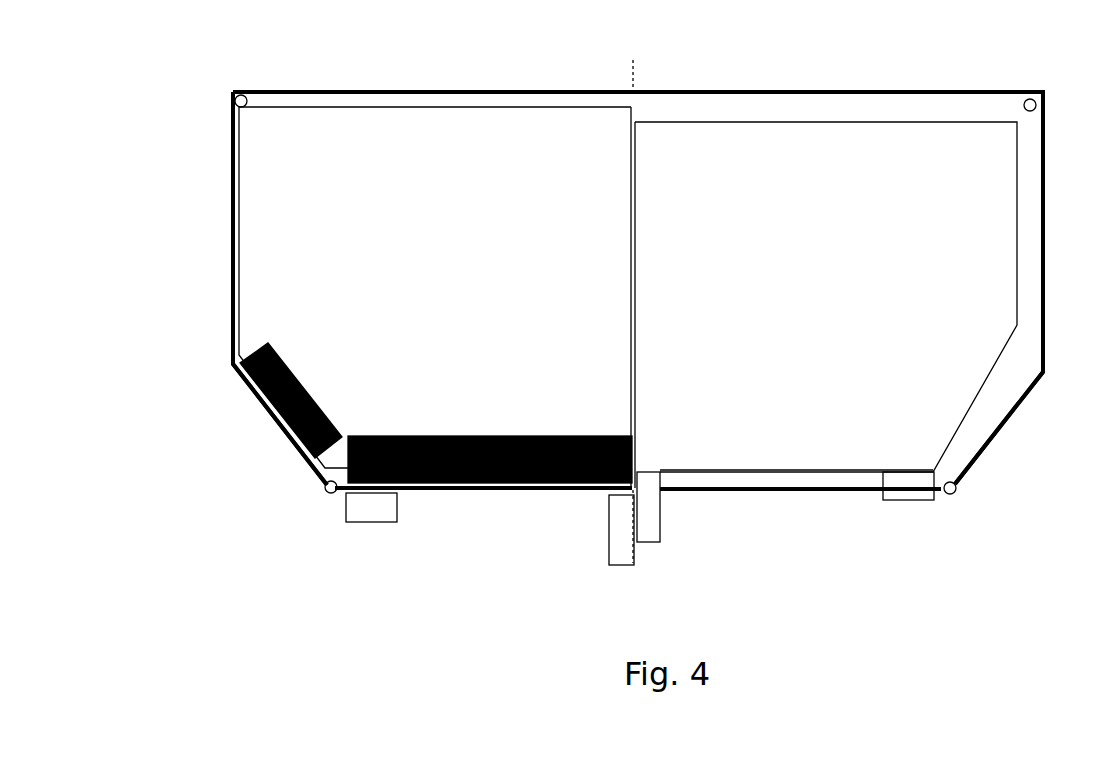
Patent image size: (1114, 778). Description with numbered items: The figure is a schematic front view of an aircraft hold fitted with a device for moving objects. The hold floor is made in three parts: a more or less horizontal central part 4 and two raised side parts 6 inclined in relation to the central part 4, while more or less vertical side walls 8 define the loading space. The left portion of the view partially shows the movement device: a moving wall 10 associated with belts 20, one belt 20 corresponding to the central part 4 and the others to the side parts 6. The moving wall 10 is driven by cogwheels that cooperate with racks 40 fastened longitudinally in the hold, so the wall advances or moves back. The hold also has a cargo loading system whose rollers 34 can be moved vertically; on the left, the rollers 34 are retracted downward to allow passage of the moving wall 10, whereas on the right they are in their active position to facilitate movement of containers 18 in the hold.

The central part 4 is at (775, 492).
The raised side part 6 is at (290, 430).
The side wall 8 is at (233, 192).
The moving wall 10 is at (397, 118).
The container 18 is at (1007, 222).
The belt 20 is at (300, 390).
The roller 34 is at (371, 508).
The rack 40 is at (241, 95).